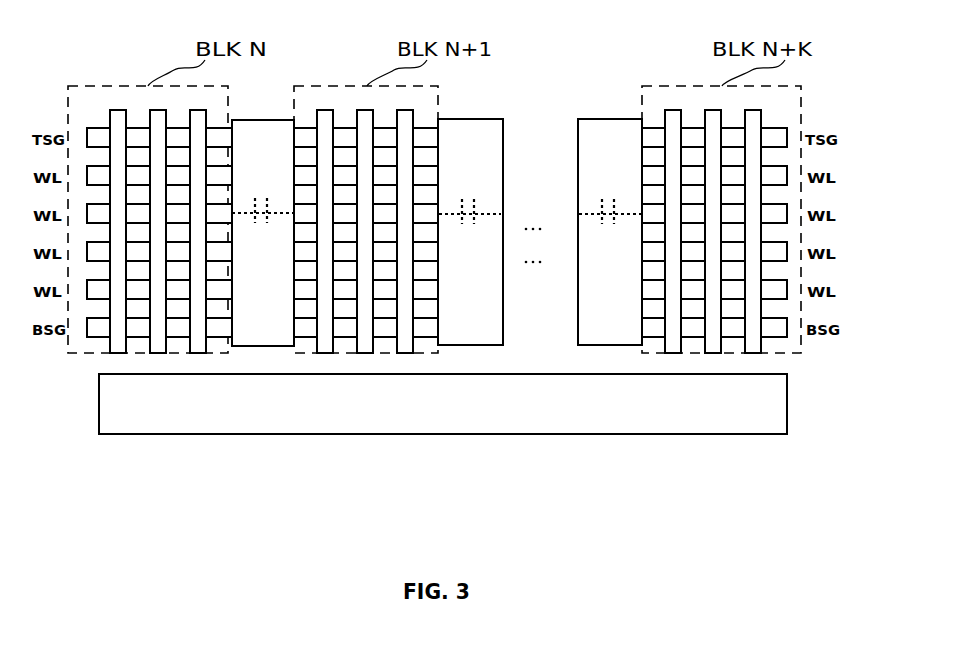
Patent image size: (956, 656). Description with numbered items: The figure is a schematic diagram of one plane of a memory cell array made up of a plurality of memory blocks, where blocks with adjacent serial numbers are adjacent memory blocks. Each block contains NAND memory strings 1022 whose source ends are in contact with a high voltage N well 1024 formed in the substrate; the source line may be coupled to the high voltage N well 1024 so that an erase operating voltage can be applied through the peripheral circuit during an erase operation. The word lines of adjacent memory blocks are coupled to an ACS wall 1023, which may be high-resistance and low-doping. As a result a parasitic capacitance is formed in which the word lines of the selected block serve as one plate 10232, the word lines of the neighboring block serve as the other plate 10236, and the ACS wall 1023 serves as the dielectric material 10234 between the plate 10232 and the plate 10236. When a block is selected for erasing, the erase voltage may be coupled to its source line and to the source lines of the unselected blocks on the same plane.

The NAND memory string 1022 is at (112, 110).
The ACS wall 1023 is at (266, 269).
The plate 10232 is at (232, 293).
The dielectric material 10234 is at (265, 295).
The plate 10236 is at (293, 298).
The high voltage N well 1024 is at (452, 434).